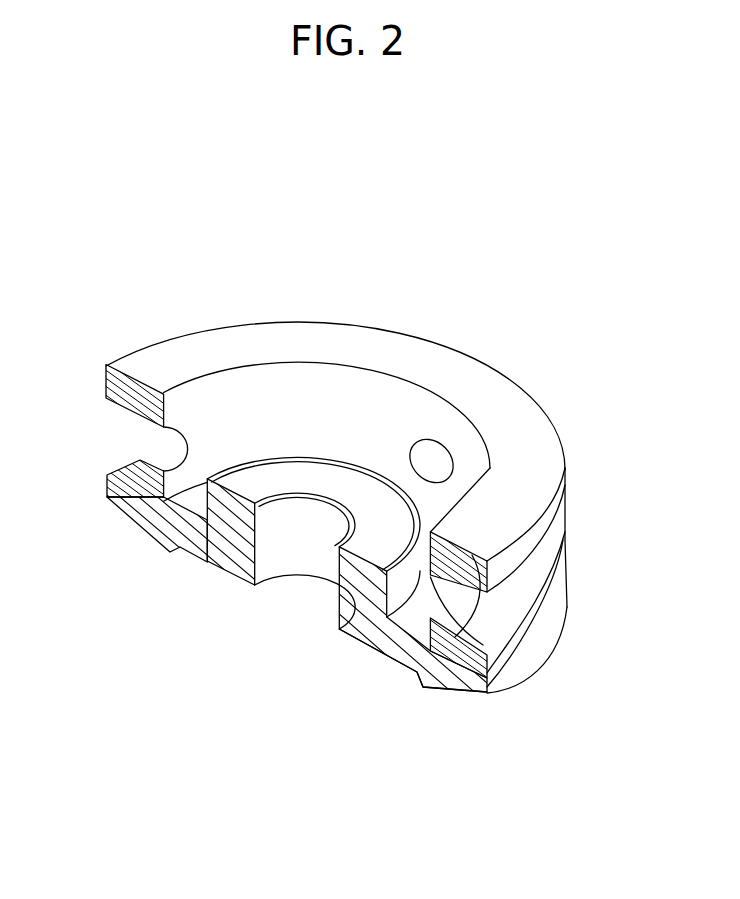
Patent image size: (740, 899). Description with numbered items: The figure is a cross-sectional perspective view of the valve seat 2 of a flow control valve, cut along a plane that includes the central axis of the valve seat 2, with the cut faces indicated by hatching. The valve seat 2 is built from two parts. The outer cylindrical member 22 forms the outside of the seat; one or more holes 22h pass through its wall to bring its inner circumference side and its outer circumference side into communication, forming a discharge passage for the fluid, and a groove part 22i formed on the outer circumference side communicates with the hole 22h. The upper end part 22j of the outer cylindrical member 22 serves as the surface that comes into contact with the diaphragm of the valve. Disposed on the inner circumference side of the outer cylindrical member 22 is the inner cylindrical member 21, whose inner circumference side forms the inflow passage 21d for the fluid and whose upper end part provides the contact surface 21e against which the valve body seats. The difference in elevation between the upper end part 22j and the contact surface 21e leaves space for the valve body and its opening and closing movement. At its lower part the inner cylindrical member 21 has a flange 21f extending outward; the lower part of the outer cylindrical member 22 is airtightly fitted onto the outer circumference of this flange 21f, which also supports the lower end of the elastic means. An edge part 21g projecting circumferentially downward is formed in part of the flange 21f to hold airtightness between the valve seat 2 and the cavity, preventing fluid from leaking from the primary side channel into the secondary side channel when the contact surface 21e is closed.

The valve seat 2 is at (546, 368).
The inner cylindrical member 21 is at (207, 550).
The inflow passage 21d is at (303, 566).
The contact surface 21e is at (263, 470).
The flange 21f is at (382, 635).
The edge part 21g is at (424, 672).
The outer cylindrical member 22 is at (460, 556).
The hole 22h is at (432, 446).
The groove part 22i is at (503, 638).
The upper end part 22j is at (304, 334).